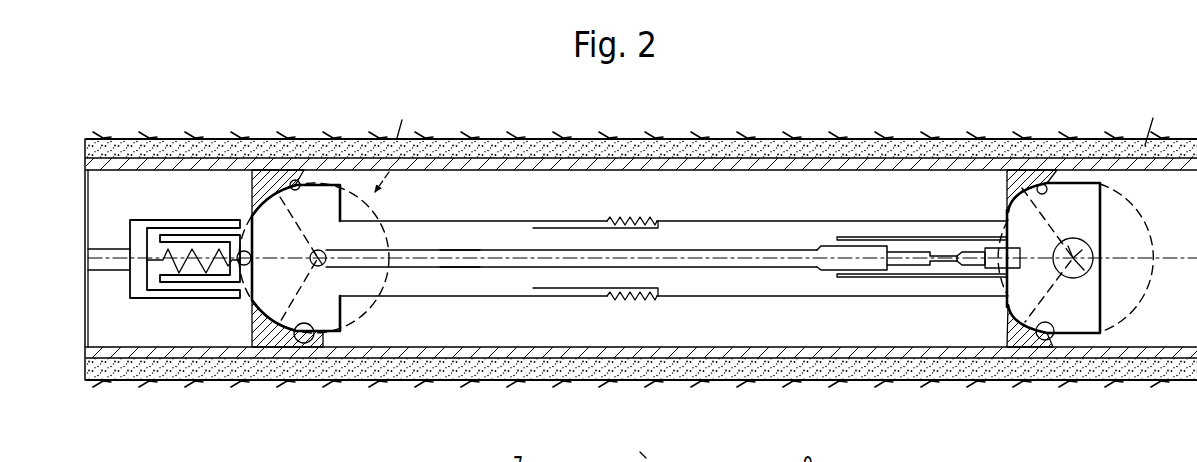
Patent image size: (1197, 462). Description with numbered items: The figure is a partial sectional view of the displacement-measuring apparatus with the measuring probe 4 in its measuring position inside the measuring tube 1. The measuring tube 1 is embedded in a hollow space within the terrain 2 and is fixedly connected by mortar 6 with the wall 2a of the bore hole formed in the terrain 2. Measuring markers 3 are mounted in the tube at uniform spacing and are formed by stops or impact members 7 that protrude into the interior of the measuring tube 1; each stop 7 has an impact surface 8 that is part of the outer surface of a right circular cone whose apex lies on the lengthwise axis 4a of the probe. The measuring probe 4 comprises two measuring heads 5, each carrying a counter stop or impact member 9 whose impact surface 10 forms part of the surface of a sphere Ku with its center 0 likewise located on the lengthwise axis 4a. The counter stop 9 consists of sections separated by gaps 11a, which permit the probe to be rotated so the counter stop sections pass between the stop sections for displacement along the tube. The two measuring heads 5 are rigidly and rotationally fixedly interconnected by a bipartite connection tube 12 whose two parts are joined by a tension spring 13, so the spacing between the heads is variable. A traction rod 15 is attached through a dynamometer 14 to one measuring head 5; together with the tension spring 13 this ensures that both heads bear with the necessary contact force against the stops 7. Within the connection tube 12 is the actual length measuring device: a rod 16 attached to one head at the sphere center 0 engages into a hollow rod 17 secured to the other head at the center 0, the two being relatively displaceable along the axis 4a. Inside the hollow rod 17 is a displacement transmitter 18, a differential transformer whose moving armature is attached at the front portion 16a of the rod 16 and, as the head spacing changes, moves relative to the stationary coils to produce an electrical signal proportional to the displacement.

The sphere center 0 is at (323, 267).
The measuring tube 1 is at (554, 352).
The terrain 2 is at (729, 107).
The bore hole wall 2a is at (488, 137).
The measuring marker 3 is at (266, 176).
The measuring probe 4 is at (745, 205).
The lengthwise axis 4a is at (425, 260).
The measuring head 5 is at (328, 181).
The mortar 6 is at (160, 140).
The stop or impact member 7 is at (266, 330).
The stop or impact surface 8 is at (293, 334).
The counter stop or impact member 9 is at (286, 186).
The stop or impact surface of counter stop 10 is at (328, 337).
The gap or space 11a is at (543, 445).
The connection tube 12 is at (707, 296).
The tension or traction spring 13 is at (618, 218).
The dynamometer 14 is at (185, 272).
The traction or pull rod 15 is at (107, 248).
The rod 16 is at (457, 268).
The front portion of the rod 16a is at (898, 240).
The hollow rod 17 is at (943, 240).
The length or displacement transmitter 18 is at (971, 273).
The sphere Ku is at (778, 140).